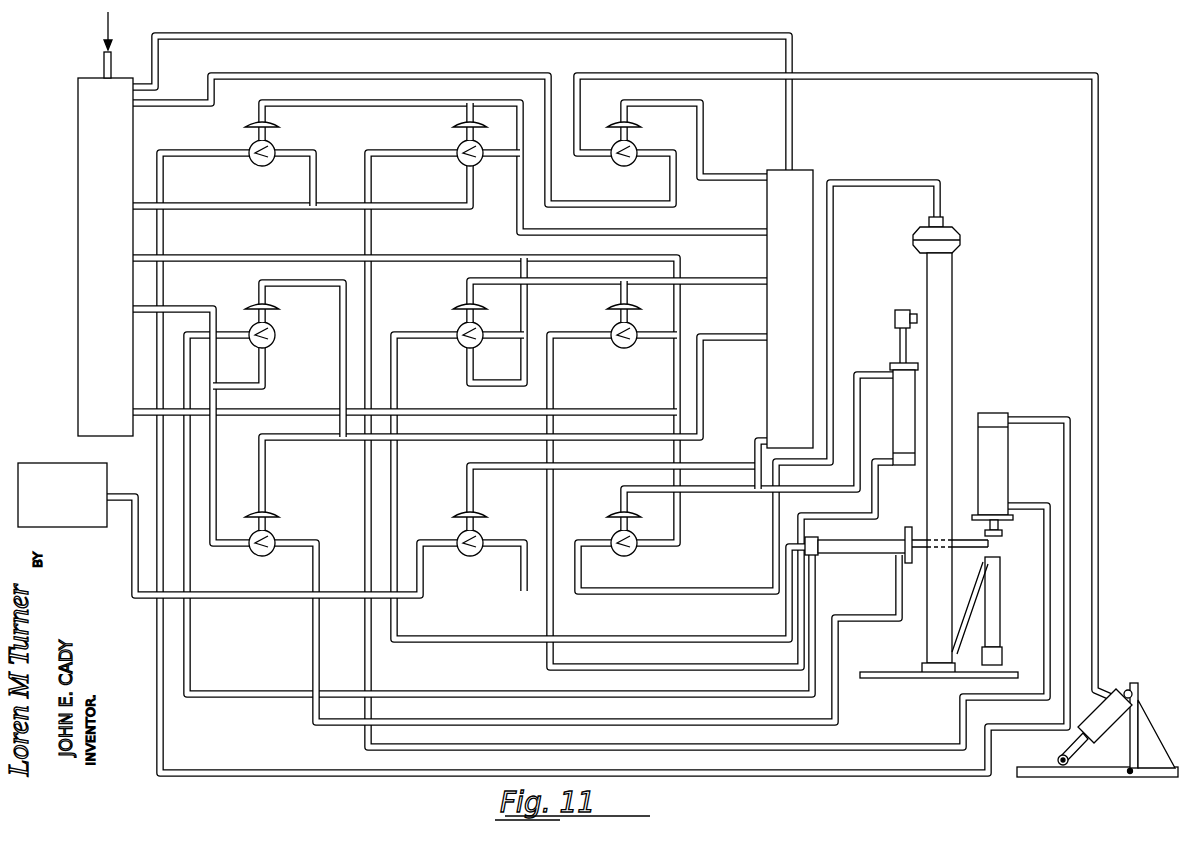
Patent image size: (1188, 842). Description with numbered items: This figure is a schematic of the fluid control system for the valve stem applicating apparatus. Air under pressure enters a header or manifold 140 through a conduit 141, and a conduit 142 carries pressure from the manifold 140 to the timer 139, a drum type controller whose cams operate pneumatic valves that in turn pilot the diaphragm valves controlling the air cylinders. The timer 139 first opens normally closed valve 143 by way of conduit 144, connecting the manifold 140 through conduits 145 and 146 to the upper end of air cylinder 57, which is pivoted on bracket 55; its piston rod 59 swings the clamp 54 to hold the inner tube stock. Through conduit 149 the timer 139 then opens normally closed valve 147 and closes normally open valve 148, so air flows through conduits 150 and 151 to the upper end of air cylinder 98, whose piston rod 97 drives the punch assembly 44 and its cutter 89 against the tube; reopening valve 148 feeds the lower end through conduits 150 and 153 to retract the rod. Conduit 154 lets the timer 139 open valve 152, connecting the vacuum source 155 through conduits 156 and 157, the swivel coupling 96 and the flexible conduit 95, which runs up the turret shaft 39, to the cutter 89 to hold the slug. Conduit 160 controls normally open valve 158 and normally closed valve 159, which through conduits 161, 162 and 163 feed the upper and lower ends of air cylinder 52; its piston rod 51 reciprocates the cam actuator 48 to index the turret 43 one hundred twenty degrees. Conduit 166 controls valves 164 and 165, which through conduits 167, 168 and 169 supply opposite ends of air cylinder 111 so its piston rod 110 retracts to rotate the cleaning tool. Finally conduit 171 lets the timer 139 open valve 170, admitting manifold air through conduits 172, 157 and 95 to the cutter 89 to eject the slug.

The turret shaft 39 is at (953, 314).
The turret 43 is at (866, 680).
The punch assembly 44 is at (1000, 596).
The cam actuator 48 is at (913, 312).
The piston rod 51 is at (900, 340).
The air cylinder 52 is at (893, 418).
The clamp 54 is at (1085, 777).
The bracket 55 is at (1141, 716).
The air cylinder 57 is at (1092, 735).
The piston rod 59 is at (1068, 749).
The cutter 89 is at (1004, 658).
The flexible conduit 95 is at (962, 637).
The swivel coupling 96 is at (950, 228).
The piston rod 97 is at (1003, 535).
The air cylinder 98 is at (1010, 463).
The piston rod 110 is at (960, 550).
The air cylinder 111 is at (880, 538).
The timer 139 is at (809, 172).
The manifold 140 is at (78, 118).
The conduit 141 is at (104, 62).
The conduit 142 is at (360, 50).
The diaphragm valve 143 is at (628, 168).
The conduit 144 is at (706, 133).
The conduit 145 is at (480, 58).
The conduit 146 is at (902, 58).
The diaphragm valve 147 is at (257, 168).
The diaphragm valve 148 is at (456, 165).
The conduit 149 is at (327, 107).
The conduit 150 is at (211, 210).
The conduit 151 is at (163, 184).
The diaphragm valve 152 is at (462, 556).
The conduit 153 is at (373, 232).
The conduit 154 is at (566, 468).
The vacuum source 155 is at (68, 453).
The conduit 156 is at (224, 598).
The conduit 157 is at (642, 594).
The diaphragm valve 158 is at (460, 348).
The diaphragm valve 159 is at (623, 349).
The conduit 160 is at (737, 272).
The conduit 161 is at (438, 256).
The conduit 162 is at (396, 388).
The conduit 163 is at (566, 345).
The diaphragm valve 164 is at (276, 332).
The diaphragm valve 165 is at (276, 535).
The conduit 166 is at (448, 456).
The conduit 167 is at (208, 305).
The conduit 168 is at (188, 440).
The conduit 169 is at (314, 574).
The diaphragm valve 170 is at (619, 556).
The conduit 171 is at (691, 495).
The conduit 172 is at (591, 407).